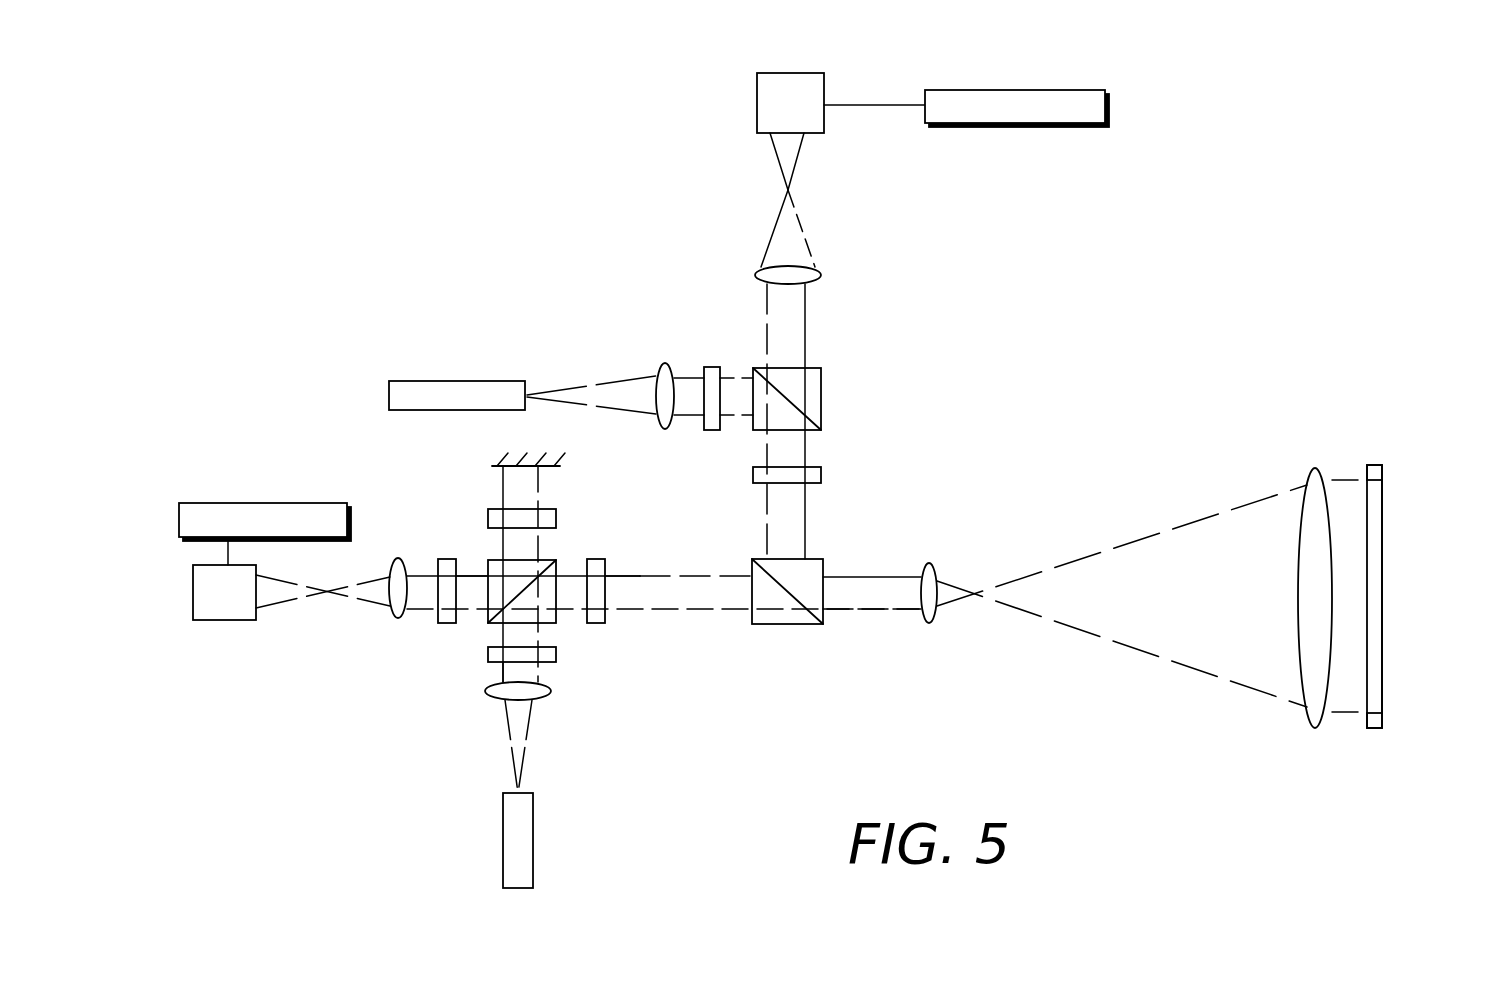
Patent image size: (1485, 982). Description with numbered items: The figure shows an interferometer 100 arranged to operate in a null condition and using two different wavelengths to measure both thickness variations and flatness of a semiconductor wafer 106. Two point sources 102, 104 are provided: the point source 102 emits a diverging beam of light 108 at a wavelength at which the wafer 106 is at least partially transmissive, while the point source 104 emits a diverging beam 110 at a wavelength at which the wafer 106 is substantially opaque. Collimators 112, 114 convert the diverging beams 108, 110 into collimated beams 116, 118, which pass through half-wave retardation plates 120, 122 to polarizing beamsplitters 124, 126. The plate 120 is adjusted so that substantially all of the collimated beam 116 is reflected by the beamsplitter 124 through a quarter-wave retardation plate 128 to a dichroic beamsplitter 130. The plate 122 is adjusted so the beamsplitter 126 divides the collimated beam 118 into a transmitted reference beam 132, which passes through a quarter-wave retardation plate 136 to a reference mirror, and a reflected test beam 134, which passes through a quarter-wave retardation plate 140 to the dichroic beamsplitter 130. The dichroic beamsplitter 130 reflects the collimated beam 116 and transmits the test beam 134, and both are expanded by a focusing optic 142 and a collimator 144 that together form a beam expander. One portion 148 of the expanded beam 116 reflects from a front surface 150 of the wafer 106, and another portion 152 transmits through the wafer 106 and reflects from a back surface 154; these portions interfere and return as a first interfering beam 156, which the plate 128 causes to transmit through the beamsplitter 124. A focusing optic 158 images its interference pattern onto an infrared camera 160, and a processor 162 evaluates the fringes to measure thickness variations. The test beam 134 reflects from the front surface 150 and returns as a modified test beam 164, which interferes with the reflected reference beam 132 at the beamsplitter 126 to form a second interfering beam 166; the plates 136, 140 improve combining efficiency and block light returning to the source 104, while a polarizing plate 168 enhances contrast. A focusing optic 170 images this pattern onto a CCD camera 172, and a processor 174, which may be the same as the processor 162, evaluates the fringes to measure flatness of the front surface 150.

The interferometer 100 is at (512, 178).
The point source 102 is at (437, 381).
The point source 104 is at (534, 840).
The semiconductor wafer 106 is at (1383, 650).
The diverging beam of light 108 is at (621, 415).
The diverging beam 110 is at (530, 752).
The collimator 112 is at (658, 368).
The collimator 114 is at (486, 689).
The collimated beam 116 is at (690, 419).
The collimated beam 118 is at (541, 673).
The half-wave retardation plate 120 is at (720, 367).
The half-wave retardation plate 122 is at (558, 664).
The polarizing beamsplitter 124 is at (825, 385).
The polarizing beamsplitter 126 is at (560, 622).
The quarter-wave retardation plate 128 is at (826, 470).
The dichroic beamsplitter 130 is at (773, 625).
The reference beam 132 is at (550, 486).
The test beam 134 is at (697, 577).
The quarter-wave retardation plate 136 is at (488, 515).
The quarter-wave retardation plate 140 is at (617, 535).
The focusing optic 142 is at (937, 614).
The collimator 144 is at (1308, 720).
The portion of the expanded beam 148 is at (1372, 729).
The front surface 150 is at (1362, 490).
The portion of the expanded beam 152 is at (1375, 465).
The back surface 154 is at (1383, 528).
The first interfering beam 156 is at (887, 577).
The focusing optic 158 is at (810, 266).
The infrared camera 160 is at (757, 94).
The processor 162 is at (1005, 90).
The modified test beam 164 is at (885, 610).
The second interfering beam 166 is at (472, 610).
The polarizing plate 168 is at (445, 559).
The focusing optic 170 is at (395, 620).
The CCD camera 172 is at (224, 592).
The processor 174 is at (250, 503).